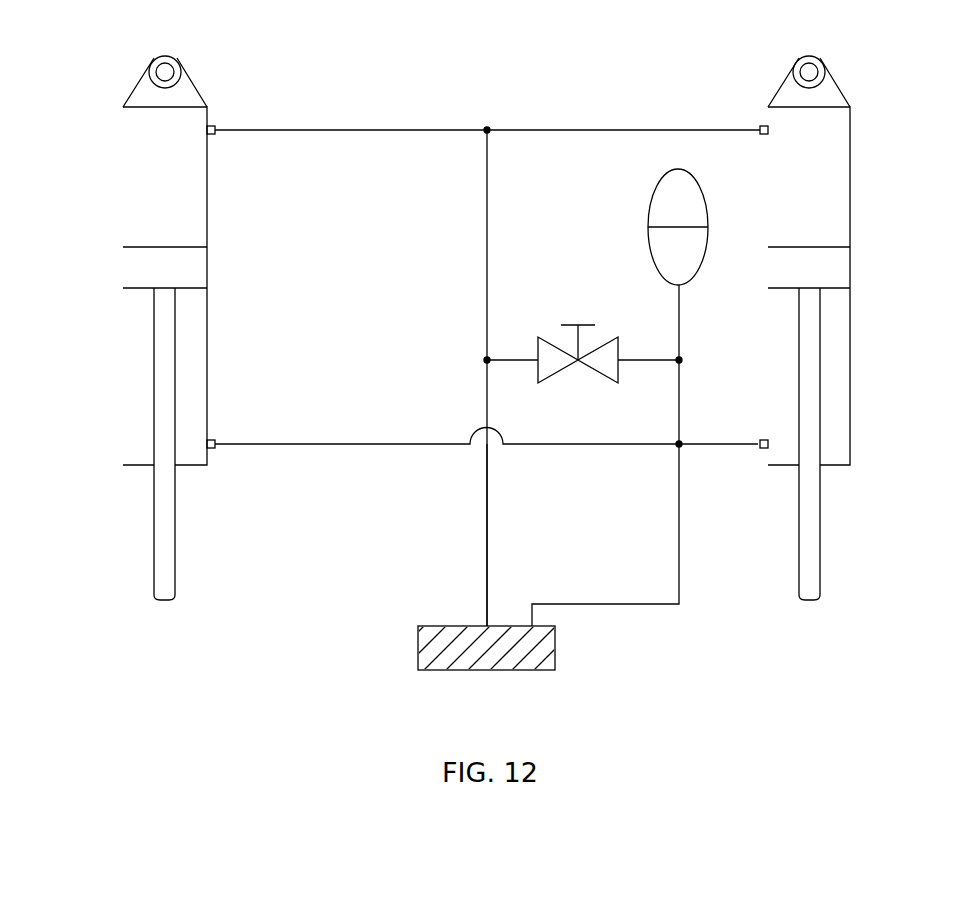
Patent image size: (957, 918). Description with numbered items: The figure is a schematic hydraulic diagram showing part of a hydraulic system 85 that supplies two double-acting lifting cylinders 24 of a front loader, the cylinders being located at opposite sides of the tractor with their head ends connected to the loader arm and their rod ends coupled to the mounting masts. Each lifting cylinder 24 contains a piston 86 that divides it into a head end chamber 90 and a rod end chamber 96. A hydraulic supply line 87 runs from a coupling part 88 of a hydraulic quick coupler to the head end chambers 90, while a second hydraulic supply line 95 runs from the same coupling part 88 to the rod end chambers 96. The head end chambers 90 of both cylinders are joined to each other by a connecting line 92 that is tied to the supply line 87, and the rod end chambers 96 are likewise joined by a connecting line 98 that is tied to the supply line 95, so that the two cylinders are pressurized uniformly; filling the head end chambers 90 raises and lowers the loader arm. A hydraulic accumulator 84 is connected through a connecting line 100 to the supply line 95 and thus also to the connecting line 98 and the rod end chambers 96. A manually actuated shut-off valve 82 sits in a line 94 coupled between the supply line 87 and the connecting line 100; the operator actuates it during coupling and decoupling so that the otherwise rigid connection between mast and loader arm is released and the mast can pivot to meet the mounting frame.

The lifting cylinder 24 is at (145, 218).
The shut-off valve 82 is at (549, 337).
The hydraulic accumulator 84 is at (652, 193).
The hydraulic system 85 is at (325, 612).
The piston 86 is at (145, 268).
The hydraulic supply line 87 is at (489, 565).
The coupling part 88 is at (530, 652).
The head end chamber 90 is at (160, 122).
The connecting line 92 is at (545, 130).
The line 94 is at (653, 353).
The hydraulic supply line 95 is at (681, 524).
The rod end chamber 96 is at (138, 380).
The connecting line 98 is at (343, 443).
The connecting line 100 is at (681, 411).